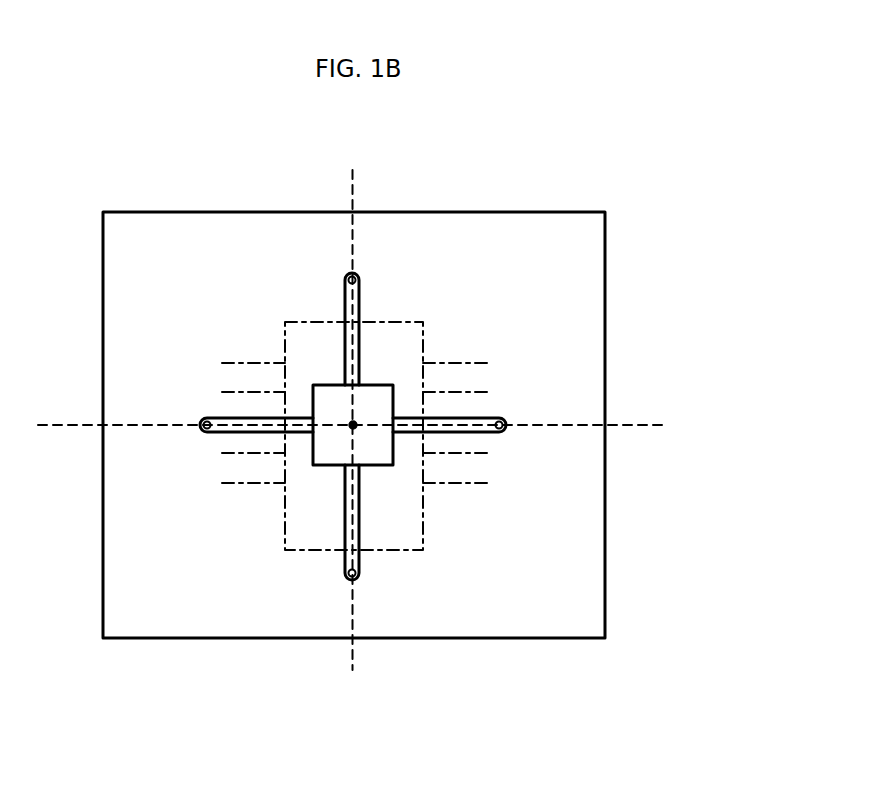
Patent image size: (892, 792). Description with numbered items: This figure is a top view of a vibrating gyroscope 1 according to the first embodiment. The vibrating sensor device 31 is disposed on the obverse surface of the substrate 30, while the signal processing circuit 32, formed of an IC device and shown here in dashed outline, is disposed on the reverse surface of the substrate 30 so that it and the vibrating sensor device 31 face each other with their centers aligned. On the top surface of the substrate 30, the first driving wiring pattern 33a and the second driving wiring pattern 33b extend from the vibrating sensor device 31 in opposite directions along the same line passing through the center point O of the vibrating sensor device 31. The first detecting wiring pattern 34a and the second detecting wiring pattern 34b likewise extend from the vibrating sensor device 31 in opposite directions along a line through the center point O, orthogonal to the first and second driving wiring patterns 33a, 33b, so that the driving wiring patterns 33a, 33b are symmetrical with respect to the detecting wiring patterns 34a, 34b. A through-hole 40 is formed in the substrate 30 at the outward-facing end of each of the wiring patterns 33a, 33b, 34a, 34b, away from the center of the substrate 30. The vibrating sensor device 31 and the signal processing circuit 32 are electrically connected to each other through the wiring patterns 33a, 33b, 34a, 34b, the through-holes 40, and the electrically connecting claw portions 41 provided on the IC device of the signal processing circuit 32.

The sensor device 1 is at (642, 106).
The substrate 30 is at (510, 225).
The vibrating sensor device 31 is at (328, 388).
The signal processing circuit 32 is at (408, 508).
The first driving wiring pattern 33a is at (460, 418).
The second driving wiring pattern 33b is at (234, 418).
The first detecting wiring pattern 34a is at (360, 306).
The second detecting wiring pattern 34b is at (363, 526).
The through-hole 40 is at (349, 276).
The electrically connecting claw portion 41 is at (255, 362).
The center point O is at (354, 424).